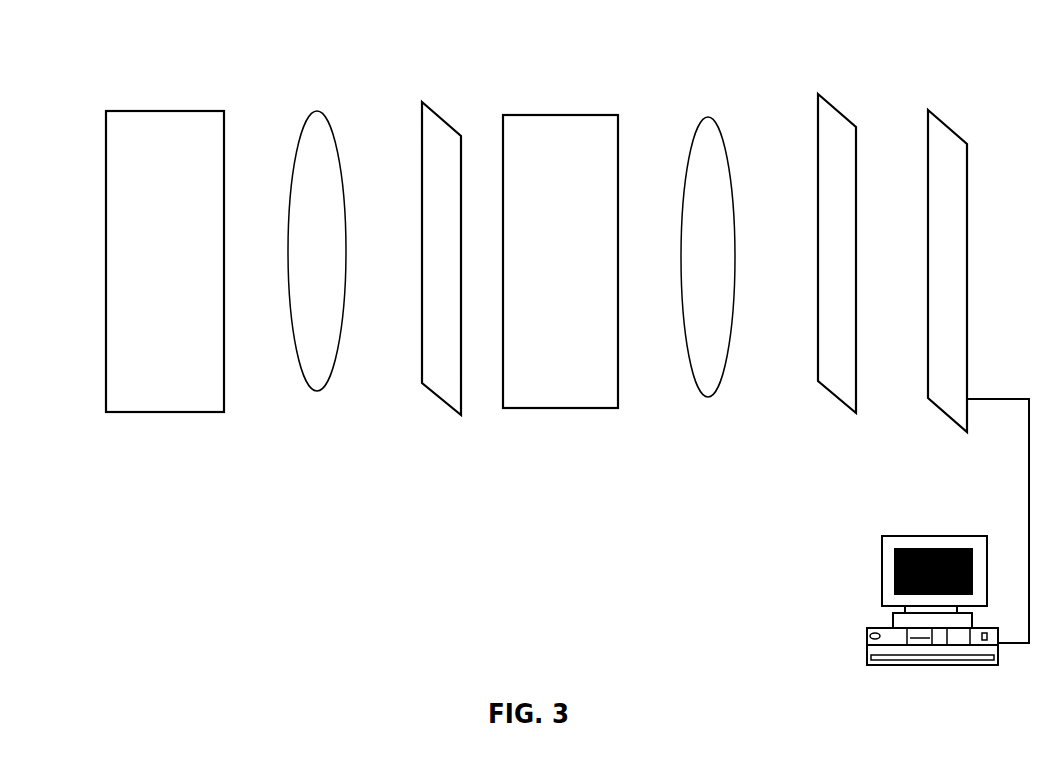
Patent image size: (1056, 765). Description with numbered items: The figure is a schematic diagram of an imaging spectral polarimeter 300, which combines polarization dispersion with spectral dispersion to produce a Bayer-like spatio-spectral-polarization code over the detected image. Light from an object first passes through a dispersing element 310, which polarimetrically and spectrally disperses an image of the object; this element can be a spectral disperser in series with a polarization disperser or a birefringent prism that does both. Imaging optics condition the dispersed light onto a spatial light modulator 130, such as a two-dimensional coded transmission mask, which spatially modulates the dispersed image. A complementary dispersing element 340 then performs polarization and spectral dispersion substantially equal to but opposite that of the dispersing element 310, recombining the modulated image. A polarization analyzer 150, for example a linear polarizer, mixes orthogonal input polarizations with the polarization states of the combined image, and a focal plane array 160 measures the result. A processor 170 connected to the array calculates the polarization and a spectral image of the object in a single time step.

The imaging spectral polarimeter 300 is at (403, 555).
The dispersing element 310 is at (152, 111).
The spatial light modulator 130 is at (437, 110).
The complementary dispersing element 340 is at (587, 408).
The polarization analyzer 150 is at (856, 413).
The focal plane array 160 is at (938, 112).
The processor 170 is at (867, 645).